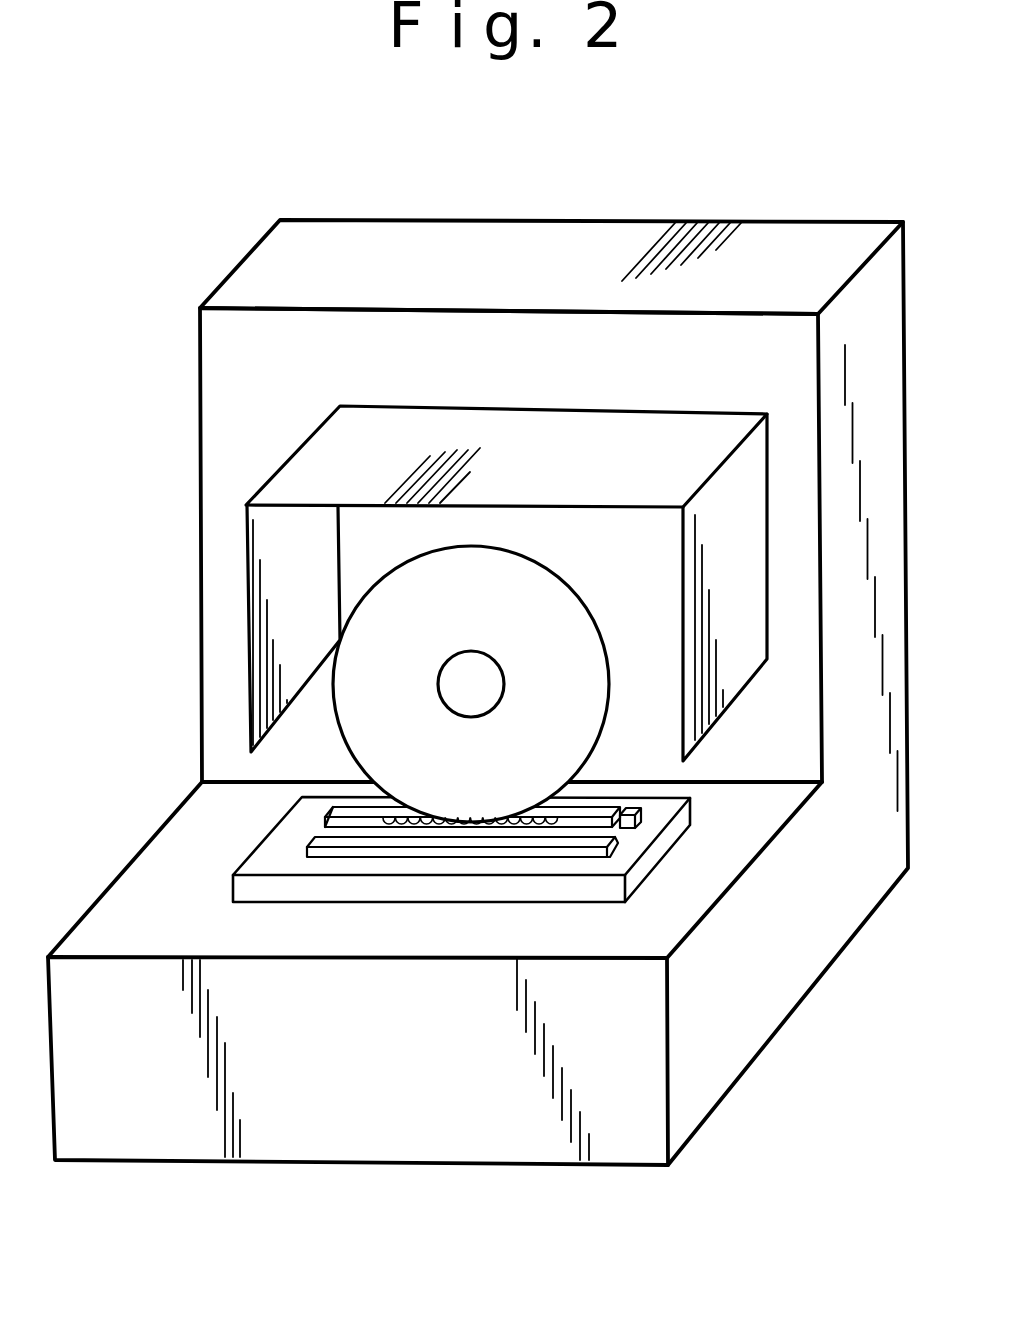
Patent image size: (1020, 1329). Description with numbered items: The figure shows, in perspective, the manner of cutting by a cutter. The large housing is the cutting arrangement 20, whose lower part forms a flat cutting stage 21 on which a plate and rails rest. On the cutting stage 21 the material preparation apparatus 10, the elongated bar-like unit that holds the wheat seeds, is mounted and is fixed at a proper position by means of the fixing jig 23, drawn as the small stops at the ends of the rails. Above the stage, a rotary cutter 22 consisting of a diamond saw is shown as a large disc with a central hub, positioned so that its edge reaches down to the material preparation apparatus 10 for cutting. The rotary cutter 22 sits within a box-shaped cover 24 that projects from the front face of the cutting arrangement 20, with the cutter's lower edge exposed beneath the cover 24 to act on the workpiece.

The material preparation apparatus 10 is at (342, 820).
The cutting arrangement 20 is at (517, 247).
The cutting stage 21 is at (518, 892).
The rotary cutter 22 is at (370, 705).
The fixing jig 23 is at (617, 847).
The cover 24 is at (310, 478).